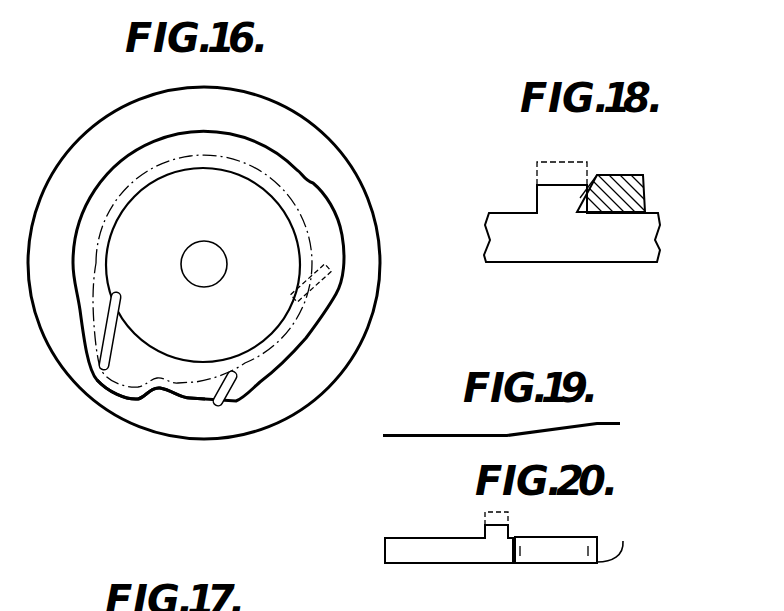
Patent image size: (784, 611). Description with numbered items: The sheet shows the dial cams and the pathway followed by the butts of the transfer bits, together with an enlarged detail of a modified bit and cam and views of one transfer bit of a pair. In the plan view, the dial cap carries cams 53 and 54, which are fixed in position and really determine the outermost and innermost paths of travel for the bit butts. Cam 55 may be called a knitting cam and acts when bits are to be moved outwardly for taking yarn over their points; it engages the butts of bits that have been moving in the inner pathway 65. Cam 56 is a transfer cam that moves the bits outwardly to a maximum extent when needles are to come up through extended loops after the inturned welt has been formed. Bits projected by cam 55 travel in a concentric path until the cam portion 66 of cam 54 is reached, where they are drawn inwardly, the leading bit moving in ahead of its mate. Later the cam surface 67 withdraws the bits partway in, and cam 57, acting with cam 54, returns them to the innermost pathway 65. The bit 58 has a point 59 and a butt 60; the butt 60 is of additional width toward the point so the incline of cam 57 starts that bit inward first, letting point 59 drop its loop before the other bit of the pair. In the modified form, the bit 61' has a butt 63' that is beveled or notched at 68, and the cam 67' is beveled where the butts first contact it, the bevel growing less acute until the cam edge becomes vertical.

In FIG. 16, the dial cap cam 53 is at (203, 265).
In FIG. 16, the dial cap cam 54 is at (204, 263).
In FIG. 16, the knitting cam 55 is at (317, 270).
In FIG. 16, the transfer cam 56 is at (110, 351).
In FIG. 16, the return cam 57 is at (223, 403).
In FIG. 16, the inner pathway 65 is at (105, 240).
In FIG. 16, the cam portion 66 is at (311, 184).
In FIG. 16, the cam surface 67 is at (151, 403).
In FIG. 18, the bit 61' is at (591, 224).
In FIG. 18, the butt 63' is at (543, 182).
In FIG. 18, the cam 67' is at (624, 193).
In FIG. 18, the notch 68 is at (580, 198).
In FIG. 19, the transfer bit 58 is at (556, 426).
In FIG. 20, the transfer bit 58 is at (562, 542).
In FIG. 20, the point 59 is at (621, 549).
In FIG. 20, the butt 60 is at (507, 531).